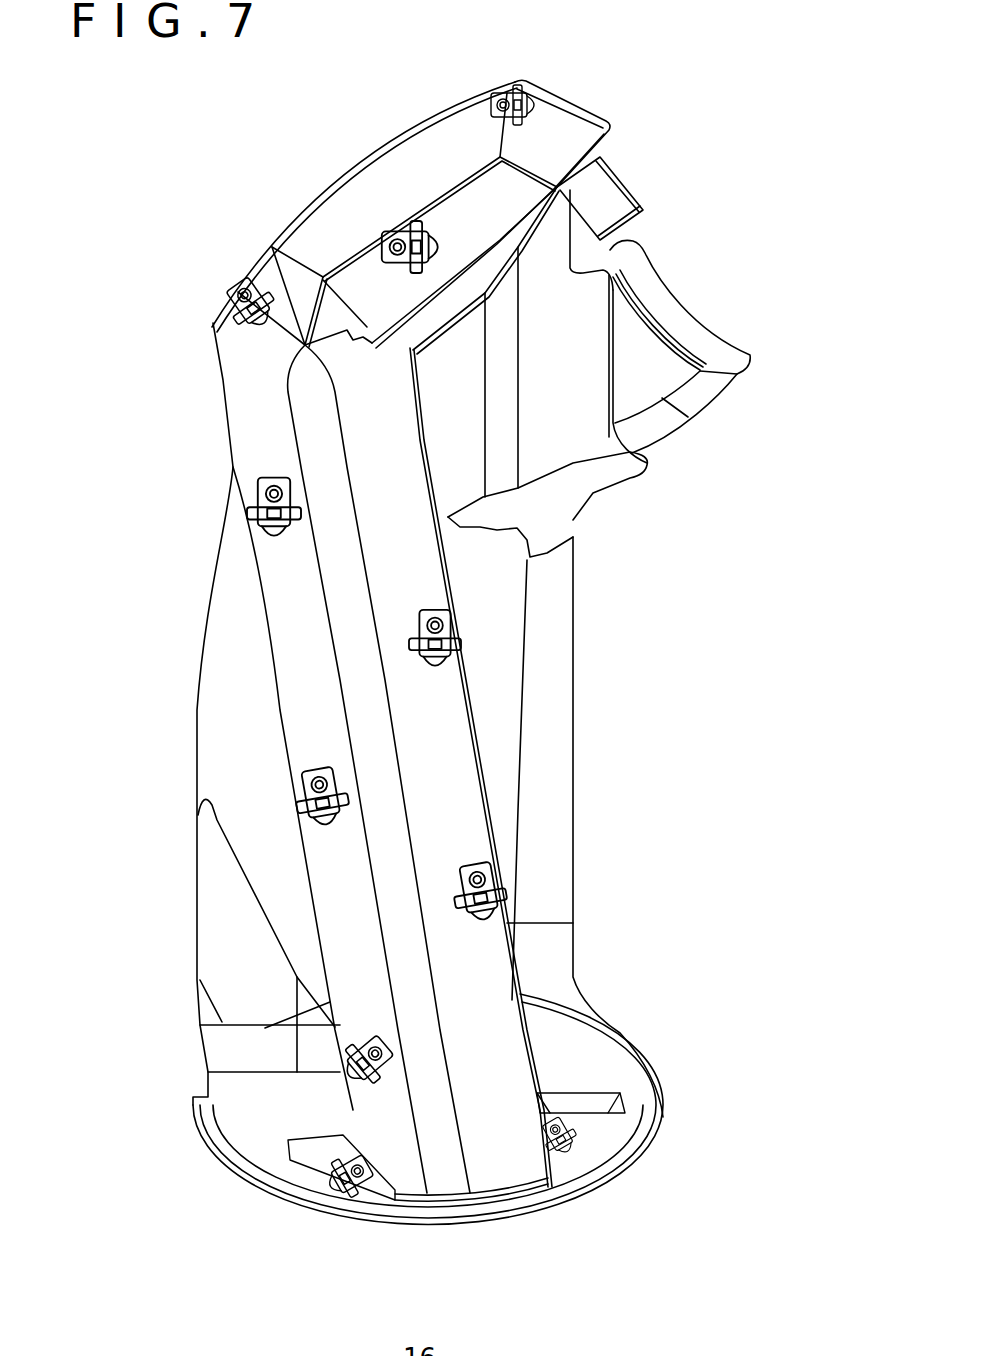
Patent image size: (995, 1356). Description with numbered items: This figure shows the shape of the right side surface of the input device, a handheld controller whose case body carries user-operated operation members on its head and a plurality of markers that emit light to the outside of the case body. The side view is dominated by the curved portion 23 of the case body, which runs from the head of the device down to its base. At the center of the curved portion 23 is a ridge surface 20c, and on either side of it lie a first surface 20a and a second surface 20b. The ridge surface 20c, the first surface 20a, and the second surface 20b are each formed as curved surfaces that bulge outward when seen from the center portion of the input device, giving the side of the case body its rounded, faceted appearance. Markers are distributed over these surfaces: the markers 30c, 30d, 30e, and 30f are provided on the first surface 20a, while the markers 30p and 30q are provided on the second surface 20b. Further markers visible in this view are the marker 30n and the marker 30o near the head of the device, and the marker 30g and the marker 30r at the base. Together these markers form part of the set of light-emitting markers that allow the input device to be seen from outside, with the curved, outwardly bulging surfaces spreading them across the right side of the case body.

The curved portion 23 is at (228, 431).
The first surface 20a is at (300, 650).
The second surface 20b is at (440, 780).
The ridge surface 20c is at (373, 713).
The marker 30c is at (240, 290).
The marker 30d is at (250, 485).
The marker 30e is at (300, 787).
The marker 30f is at (330, 1050).
The marker 30g is at (350, 1223).
The marker 30n is at (500, 95).
The marker 30o is at (397, 233).
The marker 30p is at (448, 633).
The marker 30q is at (503, 887).
The marker 30r is at (612, 1167).